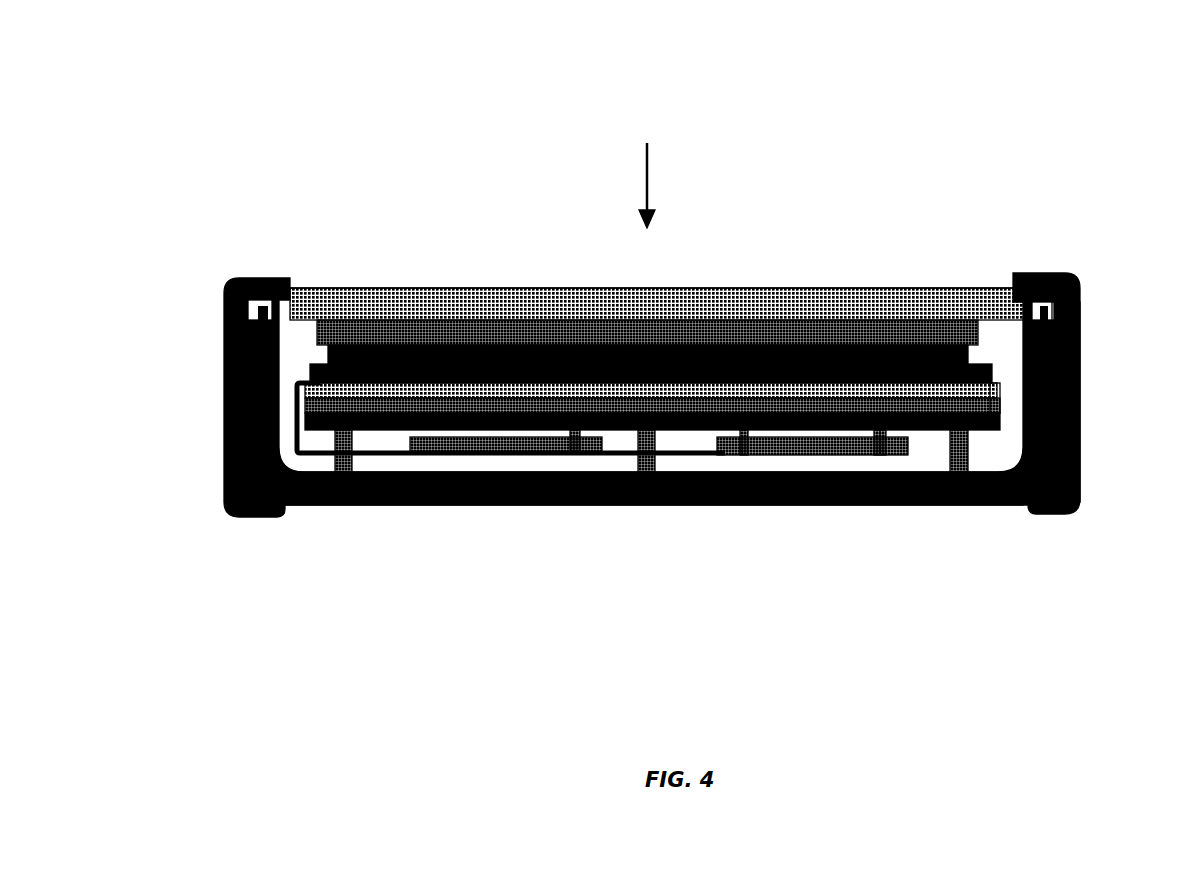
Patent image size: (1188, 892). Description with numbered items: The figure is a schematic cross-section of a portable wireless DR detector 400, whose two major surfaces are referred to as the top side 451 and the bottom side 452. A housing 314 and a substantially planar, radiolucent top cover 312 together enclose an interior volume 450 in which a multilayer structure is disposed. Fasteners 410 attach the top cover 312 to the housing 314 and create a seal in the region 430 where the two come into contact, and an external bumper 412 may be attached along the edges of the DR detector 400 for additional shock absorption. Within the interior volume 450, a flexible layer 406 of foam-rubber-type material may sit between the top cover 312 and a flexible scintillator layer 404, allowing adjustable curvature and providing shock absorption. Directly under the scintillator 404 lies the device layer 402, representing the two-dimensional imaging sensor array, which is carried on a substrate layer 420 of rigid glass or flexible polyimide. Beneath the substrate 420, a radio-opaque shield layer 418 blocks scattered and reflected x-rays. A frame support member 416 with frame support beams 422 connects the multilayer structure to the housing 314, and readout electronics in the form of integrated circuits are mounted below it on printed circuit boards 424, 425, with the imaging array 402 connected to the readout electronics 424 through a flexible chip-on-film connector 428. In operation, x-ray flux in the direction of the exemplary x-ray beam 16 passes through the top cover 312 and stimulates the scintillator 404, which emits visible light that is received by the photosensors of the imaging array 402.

The DR detector 400 is at (247, 188).
The x-ray beam 16 is at (640, 177).
The top side 451 is at (443, 170).
The bottom side 452 is at (436, 677).
The fasteners 410 is at (653, 371).
The region 430 is at (285, 317).
The external bumper 412 is at (1083, 393).
The interior volume 450 is at (1083, 452).
The device layer 402 is at (671, 266).
The top cover 312 is at (955, 303).
The scintillator layer 404 is at (768, 345).
The flexible layer 406 is at (856, 335).
The substrate layer 420 is at (742, 383).
The radio-opaque shield layer 418 is at (783, 403).
The frame support member 416 is at (867, 420).
The housing 314 is at (1008, 392).
The frame support beams 422 is at (342, 480).
The printed circuit board 424 is at (470, 448).
The printed circuit board 425 is at (765, 447).
The flexible connector 428 is at (305, 455).